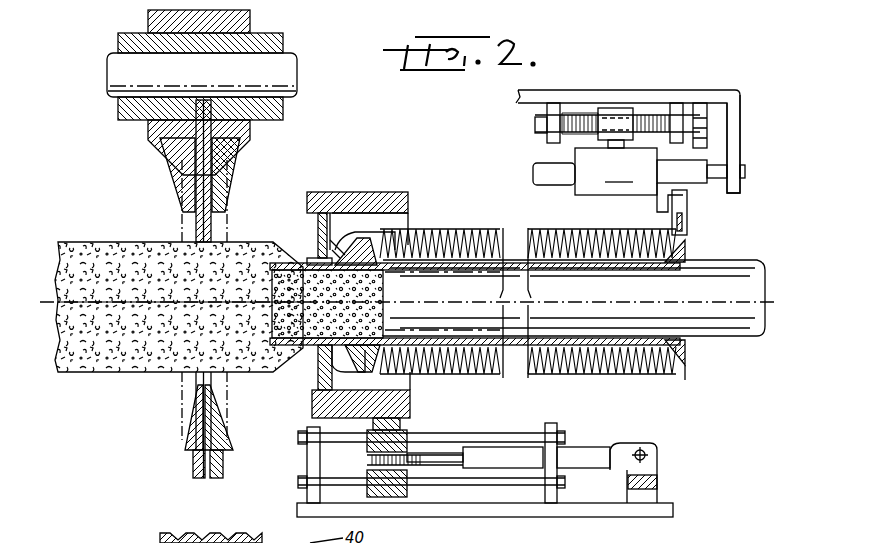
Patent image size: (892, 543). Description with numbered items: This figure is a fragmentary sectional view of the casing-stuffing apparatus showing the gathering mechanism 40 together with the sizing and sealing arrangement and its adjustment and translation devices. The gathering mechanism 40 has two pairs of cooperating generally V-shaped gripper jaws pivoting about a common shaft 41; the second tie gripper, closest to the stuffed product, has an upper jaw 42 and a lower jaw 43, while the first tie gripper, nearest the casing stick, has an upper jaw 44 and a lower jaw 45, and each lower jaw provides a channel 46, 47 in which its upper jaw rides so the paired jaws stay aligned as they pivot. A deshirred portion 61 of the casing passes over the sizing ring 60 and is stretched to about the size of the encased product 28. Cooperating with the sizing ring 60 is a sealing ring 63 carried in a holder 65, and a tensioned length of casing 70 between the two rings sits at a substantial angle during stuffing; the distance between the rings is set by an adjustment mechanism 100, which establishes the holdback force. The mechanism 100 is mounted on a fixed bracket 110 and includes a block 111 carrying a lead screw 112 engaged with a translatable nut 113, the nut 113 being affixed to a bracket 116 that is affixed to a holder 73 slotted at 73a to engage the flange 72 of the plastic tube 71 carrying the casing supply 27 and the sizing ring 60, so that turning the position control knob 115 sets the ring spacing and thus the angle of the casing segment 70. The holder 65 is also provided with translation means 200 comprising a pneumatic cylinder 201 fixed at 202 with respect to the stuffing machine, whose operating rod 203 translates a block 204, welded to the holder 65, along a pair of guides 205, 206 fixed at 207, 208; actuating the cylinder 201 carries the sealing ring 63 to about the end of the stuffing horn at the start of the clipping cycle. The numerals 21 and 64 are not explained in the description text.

The extruded tube / billet 21 is at (385, 300).
The casing supply 27 is at (545, 230).
The encased product 28 is at (95, 240).
The gathering mechanism 40 is at (305, 29).
The common shaft 41 is at (290, 72).
The upper jaw 42 is at (188, 228).
The lower jaw 43 is at (188, 168).
The upper jaw 44 is at (215, 230).
The lower jaw 45 is at (215, 165).
The channel 46 is at (192, 460).
The channel 47 is at (225, 462).
The sizing ring 60 is at (372, 258).
The deshirred portion 61 is at (355, 230).
The sealing ring 63 is at (312, 252).
The lower die block 64 is at (312, 400).
The holder 65 is at (385, 192).
The tensioned length of casing 70 is at (318, 225).
The plastic tube 71 is at (440, 338).
The flange 72 is at (690, 250).
The holder 73 is at (688, 216).
The slot 73a is at (670, 216).
The adjustment mechanism 100 is at (672, 77).
The fixed bracket 110 is at (736, 105).
The block 111 is at (545, 136).
The lead screw 112 is at (582, 114).
The translatable nut 113 is at (614, 108).
The position control knob 115 is at (705, 110).
The bracket 116 is at (616, 171).
The translation means 200 is at (604, 432).
The pneumatic cylinder 201 is at (540, 447).
The fixed point 202 is at (650, 456).
The operating rod 203 is at (425, 470).
The block 204 is at (402, 424).
The guide 205 is at (478, 436).
The guide 206 is at (505, 506).
The fixed point 207 is at (306, 480).
The fixed point 208 is at (558, 494).